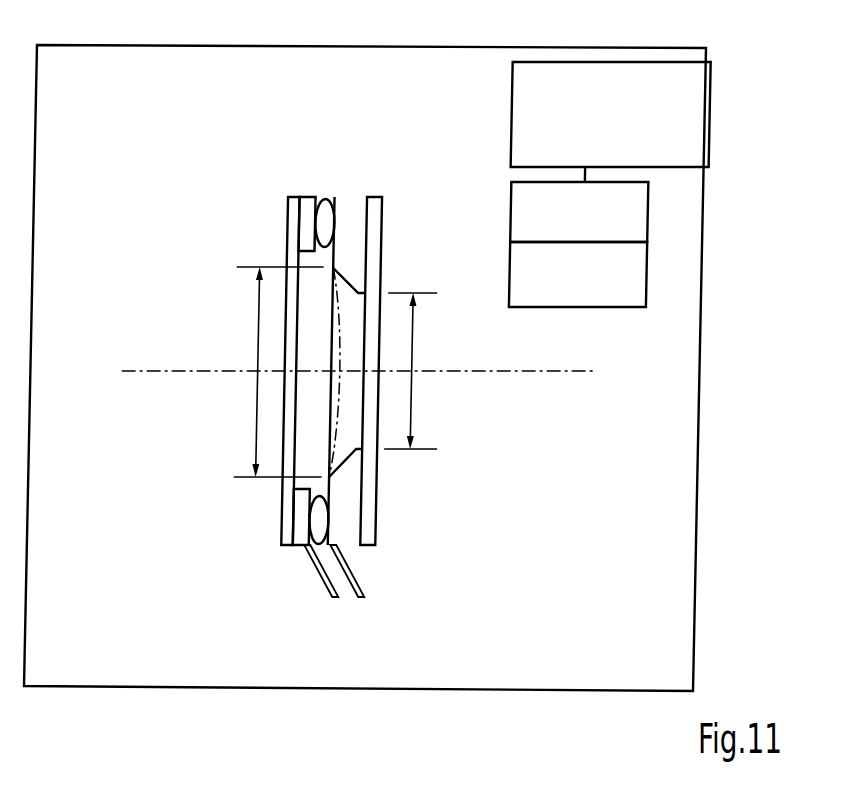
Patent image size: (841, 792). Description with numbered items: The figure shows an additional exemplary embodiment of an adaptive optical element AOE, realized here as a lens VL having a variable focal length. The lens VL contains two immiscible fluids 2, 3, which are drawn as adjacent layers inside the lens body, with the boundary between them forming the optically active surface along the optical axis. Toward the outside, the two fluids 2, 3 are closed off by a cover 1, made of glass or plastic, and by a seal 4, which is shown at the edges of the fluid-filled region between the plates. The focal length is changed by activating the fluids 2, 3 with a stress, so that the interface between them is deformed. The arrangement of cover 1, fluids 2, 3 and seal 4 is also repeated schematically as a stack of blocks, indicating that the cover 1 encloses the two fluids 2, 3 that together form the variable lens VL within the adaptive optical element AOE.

The cover 1 is at (294, 500).
The immiscible fluid 2 is at (317, 410).
The immiscible fluid 3 is at (360, 313).
The seal 4 is at (325, 205).
The lens having variable focus VL is at (390, 467).
The adaptive optical element AOE is at (236, 565).